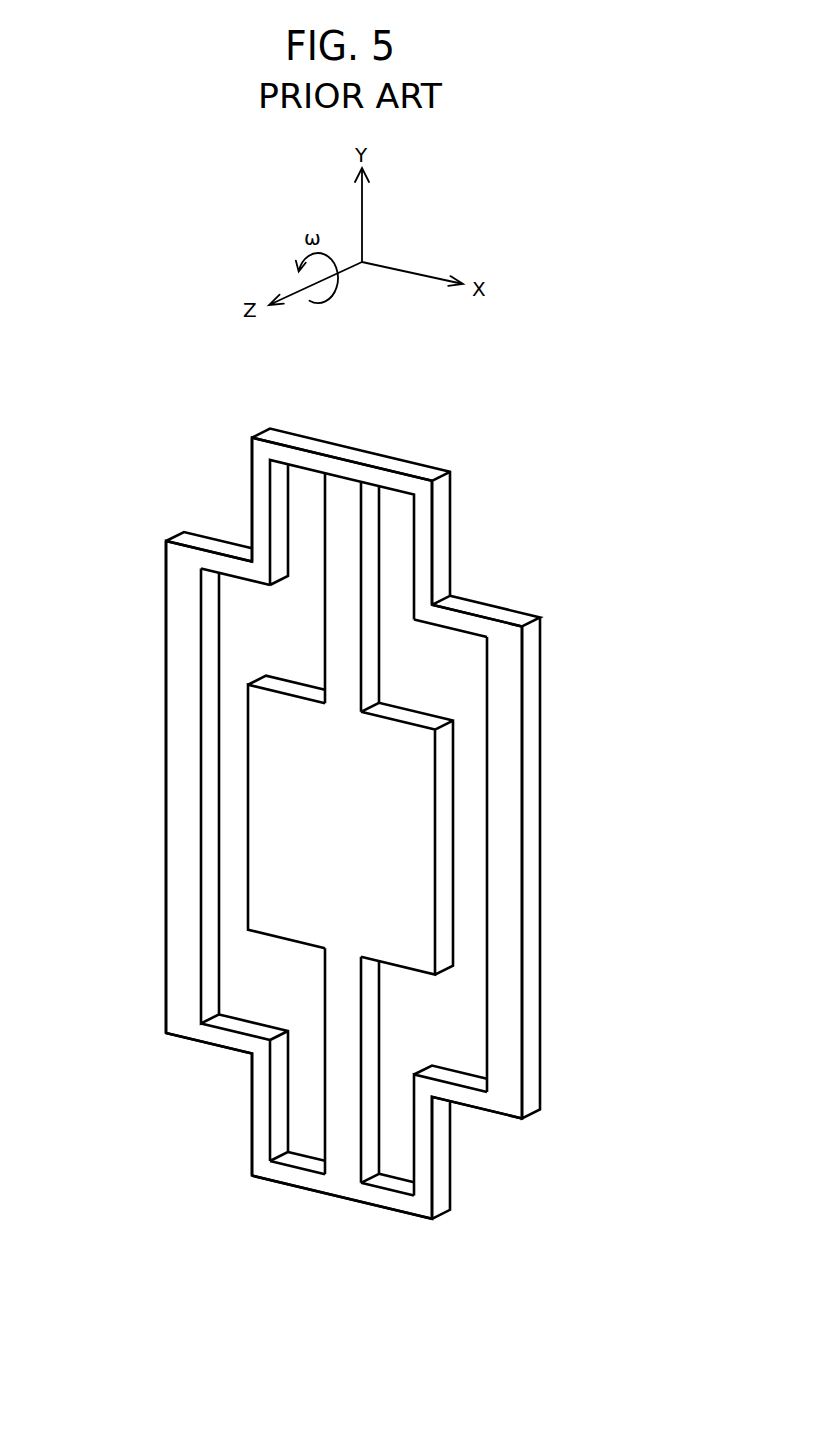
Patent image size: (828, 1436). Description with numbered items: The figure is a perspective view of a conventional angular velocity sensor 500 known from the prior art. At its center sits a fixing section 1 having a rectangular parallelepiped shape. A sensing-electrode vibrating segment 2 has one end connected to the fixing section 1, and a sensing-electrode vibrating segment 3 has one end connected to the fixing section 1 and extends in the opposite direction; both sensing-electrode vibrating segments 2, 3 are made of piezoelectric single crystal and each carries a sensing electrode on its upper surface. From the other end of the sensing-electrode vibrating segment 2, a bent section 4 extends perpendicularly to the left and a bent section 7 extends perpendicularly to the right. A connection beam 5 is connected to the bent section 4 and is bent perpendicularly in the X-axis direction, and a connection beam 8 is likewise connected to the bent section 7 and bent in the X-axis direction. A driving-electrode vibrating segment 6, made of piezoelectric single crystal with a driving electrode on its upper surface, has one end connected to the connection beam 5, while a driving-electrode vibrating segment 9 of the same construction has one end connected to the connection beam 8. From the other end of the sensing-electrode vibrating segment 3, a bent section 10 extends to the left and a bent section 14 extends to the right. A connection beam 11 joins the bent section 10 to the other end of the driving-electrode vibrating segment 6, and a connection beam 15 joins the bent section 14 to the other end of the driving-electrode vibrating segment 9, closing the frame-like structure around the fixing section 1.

The angular velocity sensor 500 is at (610, 508).
The fixing section 1 is at (400, 812).
The sensing-electrode vibrating segment 2 is at (340, 1047).
The sensing-electrode vibrating segment 3 is at (337, 607).
The bent section 4 is at (290, 1177).
The connection beam 5 is at (267, 1093).
The driving-electrode vibrating segment 6 is at (183, 795).
The bent section 7 is at (396, 1200).
The connection beam 8 is at (423, 1138).
The driving-electrode vibrating segment 9 is at (500, 897).
The bent section 10 is at (303, 458).
The connection beam 11 is at (224, 562).
The bent section 14 is at (402, 482).
The connection beam 15 is at (423, 528).